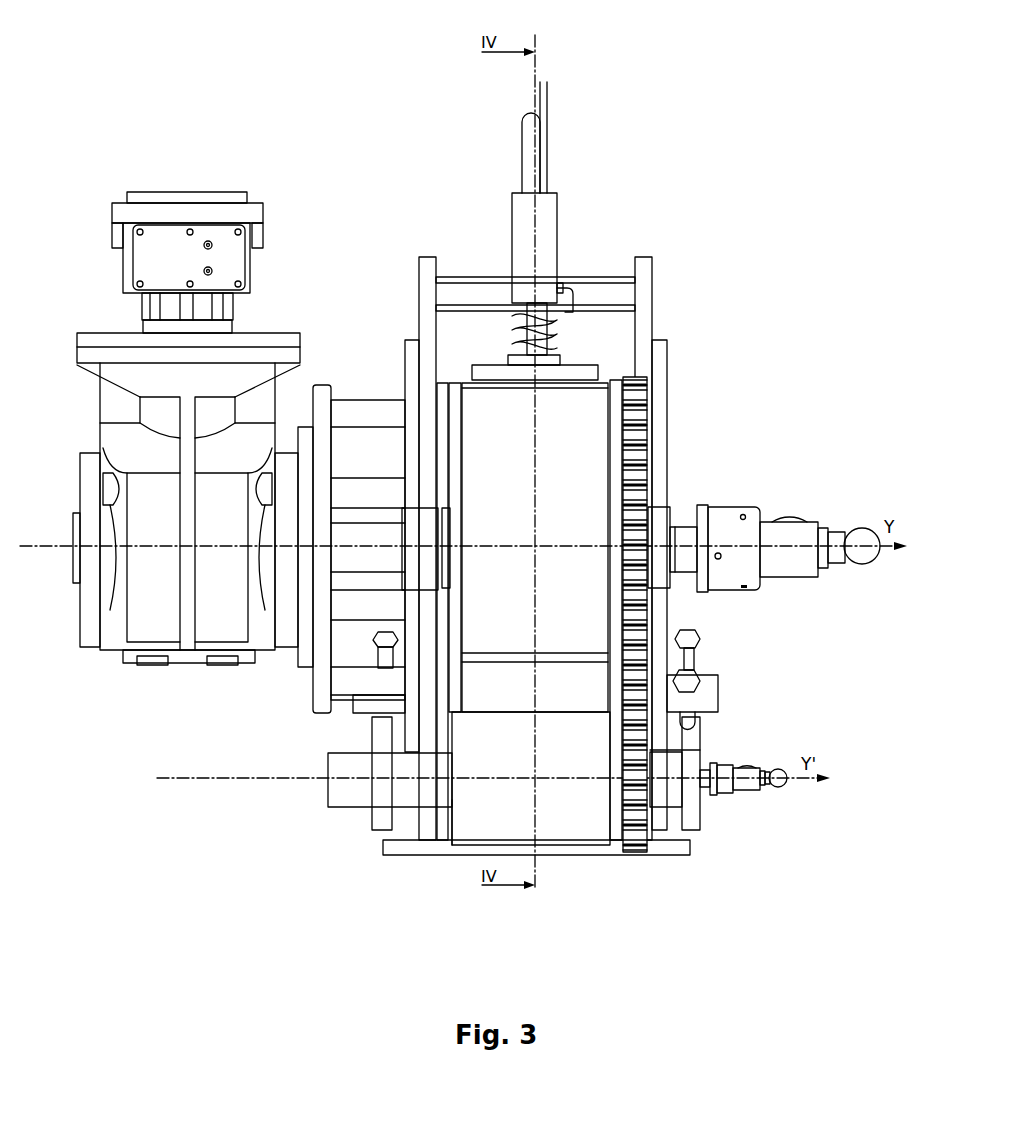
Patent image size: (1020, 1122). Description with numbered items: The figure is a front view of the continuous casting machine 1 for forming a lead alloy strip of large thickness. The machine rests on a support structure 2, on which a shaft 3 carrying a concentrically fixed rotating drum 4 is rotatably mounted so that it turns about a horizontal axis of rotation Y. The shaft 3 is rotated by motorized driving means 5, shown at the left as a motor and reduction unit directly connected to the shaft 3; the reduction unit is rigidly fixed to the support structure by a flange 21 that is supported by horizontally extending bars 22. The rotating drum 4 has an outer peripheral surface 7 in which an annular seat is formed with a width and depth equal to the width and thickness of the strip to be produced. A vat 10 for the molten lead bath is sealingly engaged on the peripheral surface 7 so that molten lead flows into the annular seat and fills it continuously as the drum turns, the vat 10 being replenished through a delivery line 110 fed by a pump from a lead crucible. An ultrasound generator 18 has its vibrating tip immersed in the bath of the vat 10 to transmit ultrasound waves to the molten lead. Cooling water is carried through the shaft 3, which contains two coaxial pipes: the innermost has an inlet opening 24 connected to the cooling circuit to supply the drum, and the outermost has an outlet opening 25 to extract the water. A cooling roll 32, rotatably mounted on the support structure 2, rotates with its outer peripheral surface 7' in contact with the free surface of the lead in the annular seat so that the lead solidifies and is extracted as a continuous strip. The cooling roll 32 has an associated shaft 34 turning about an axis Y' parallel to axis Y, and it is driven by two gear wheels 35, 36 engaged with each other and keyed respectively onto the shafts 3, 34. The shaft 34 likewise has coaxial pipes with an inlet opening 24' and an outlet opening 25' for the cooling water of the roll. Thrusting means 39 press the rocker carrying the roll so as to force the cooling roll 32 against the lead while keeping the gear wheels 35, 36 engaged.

The continuous casting machine 1 is at (686, 139).
The support structure 2 is at (395, 848).
The shaft 3 is at (687, 563).
The rotating drum 4 is at (572, 490).
The motorized driving means 5 is at (119, 723).
The outer peripheral surface 7 is at (535, 547).
The outer peripheral surface 7' is at (531, 778).
The vat 10 is at (567, 373).
The ultrasound generator 18 is at (525, 253).
The flange 21 is at (323, 690).
The bars 22 is at (395, 493).
The inlet opening 24 is at (866, 503).
The inlet opening 24' is at (785, 755).
The outlet opening 25 is at (802, 478).
The outlet opening 25' is at (763, 731).
The cooling roll 32 is at (475, 825).
The shaft 34 is at (713, 795).
The gear wheel 35 is at (647, 450).
The gear wheel 36 is at (640, 825).
The thrusting means 39 is at (715, 685).
The delivery line 110 is at (525, 162).